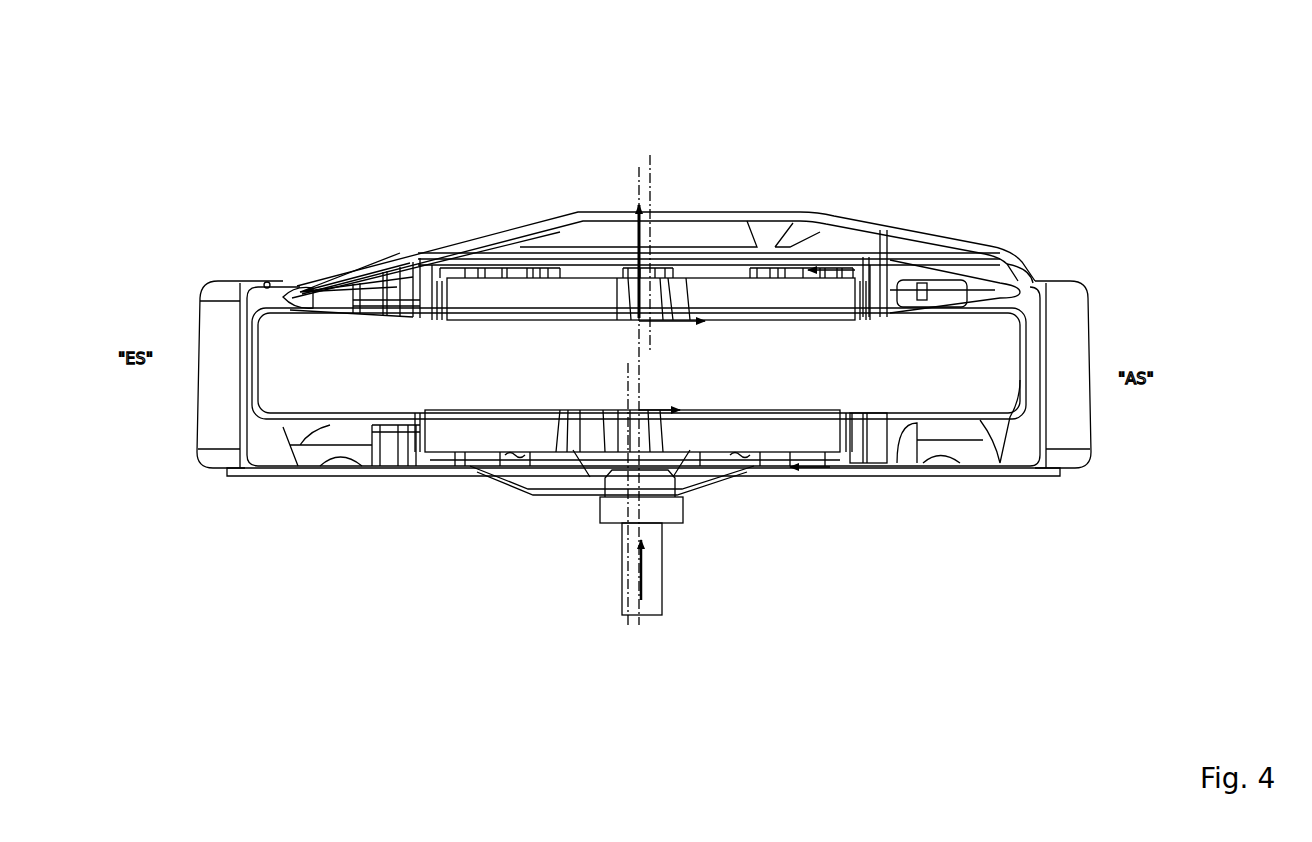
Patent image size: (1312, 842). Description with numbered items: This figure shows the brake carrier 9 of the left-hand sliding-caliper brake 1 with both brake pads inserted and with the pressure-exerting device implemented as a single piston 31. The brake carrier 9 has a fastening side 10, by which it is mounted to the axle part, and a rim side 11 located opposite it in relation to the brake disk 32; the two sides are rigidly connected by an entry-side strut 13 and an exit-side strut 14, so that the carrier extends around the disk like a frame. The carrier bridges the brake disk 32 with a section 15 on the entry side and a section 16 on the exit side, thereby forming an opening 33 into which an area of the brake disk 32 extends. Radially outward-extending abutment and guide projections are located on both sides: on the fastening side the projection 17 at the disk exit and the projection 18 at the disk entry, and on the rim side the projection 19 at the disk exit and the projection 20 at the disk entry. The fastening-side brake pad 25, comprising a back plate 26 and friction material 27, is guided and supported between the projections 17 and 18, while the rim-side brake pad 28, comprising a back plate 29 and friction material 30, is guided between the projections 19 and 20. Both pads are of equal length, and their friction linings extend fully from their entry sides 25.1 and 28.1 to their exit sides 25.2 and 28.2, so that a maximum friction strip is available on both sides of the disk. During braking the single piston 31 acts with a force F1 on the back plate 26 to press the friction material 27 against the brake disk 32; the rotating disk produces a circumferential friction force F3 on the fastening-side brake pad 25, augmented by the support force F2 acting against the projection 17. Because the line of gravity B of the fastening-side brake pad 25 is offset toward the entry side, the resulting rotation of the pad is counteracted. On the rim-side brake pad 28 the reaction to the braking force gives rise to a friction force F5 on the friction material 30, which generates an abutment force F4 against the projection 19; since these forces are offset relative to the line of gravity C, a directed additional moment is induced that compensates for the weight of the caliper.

The sliding-caliper brake 1 is at (285, 508).
The brake carrier 9 is at (1045, 537).
The fastening side 10 is at (1040, 475).
The rim side 11 is at (733, 217).
The entry-side strut 13 is at (200, 347).
The exit-side strut 14 is at (1089, 355).
The entry-side section 15 is at (229, 432).
The exit-side section 16 is at (1074, 431).
The projection 17 is at (853, 473).
The projection 18 is at (410, 473).
The projection 19 is at (885, 230).
The projection 20 is at (420, 263).
The fastening-side brake pad 25 is at (627, 516).
The entry side 25.1 is at (465, 436).
The exit side 25.2 is at (793, 436).
The back plate 26 is at (528, 480).
The friction material 27 is at (500, 438).
The rim-side brake pad 28 is at (626, 211).
The entry side 28.1 is at (483, 304).
The exit side 28.2 is at (823, 304).
The back plate 29 is at (457, 272).
The friction material 30 is at (500, 297).
The single piston 31 is at (673, 513).
The brake disk 32 is at (962, 337).
The opening 33 is at (997, 440).
The line of gravity B is at (627, 517).
The line of gravity C is at (652, 160).
The force F1 is at (638, 228).
The support force F2 is at (812, 470).
The friction force F3 is at (657, 413).
The abutment force F4 is at (833, 267).
The friction force F5 is at (687, 317).